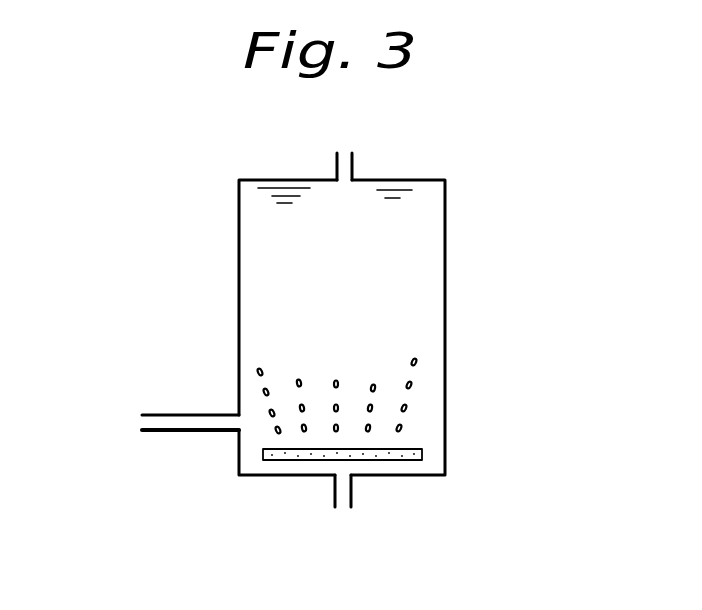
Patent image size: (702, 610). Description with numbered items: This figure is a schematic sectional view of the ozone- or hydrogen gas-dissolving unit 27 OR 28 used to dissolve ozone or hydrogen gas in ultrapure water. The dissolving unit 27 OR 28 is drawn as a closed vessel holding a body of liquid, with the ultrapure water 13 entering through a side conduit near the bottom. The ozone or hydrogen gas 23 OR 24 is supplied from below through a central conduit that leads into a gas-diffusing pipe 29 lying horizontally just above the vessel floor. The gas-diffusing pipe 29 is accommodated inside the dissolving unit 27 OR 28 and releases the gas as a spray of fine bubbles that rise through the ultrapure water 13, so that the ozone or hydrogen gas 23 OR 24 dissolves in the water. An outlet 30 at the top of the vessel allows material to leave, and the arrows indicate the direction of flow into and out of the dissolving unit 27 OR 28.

The ultrapure water 13 is at (132, 423).
The ozone or hydrogen gas 23 OR 24 is at (343, 509).
The ozone- or hydrogen gas-dissolving unit 27 OR 28 is at (445, 315).
The gas-diffusing pipe 29 is at (413, 461).
The gas outlet 30 is at (347, 155).